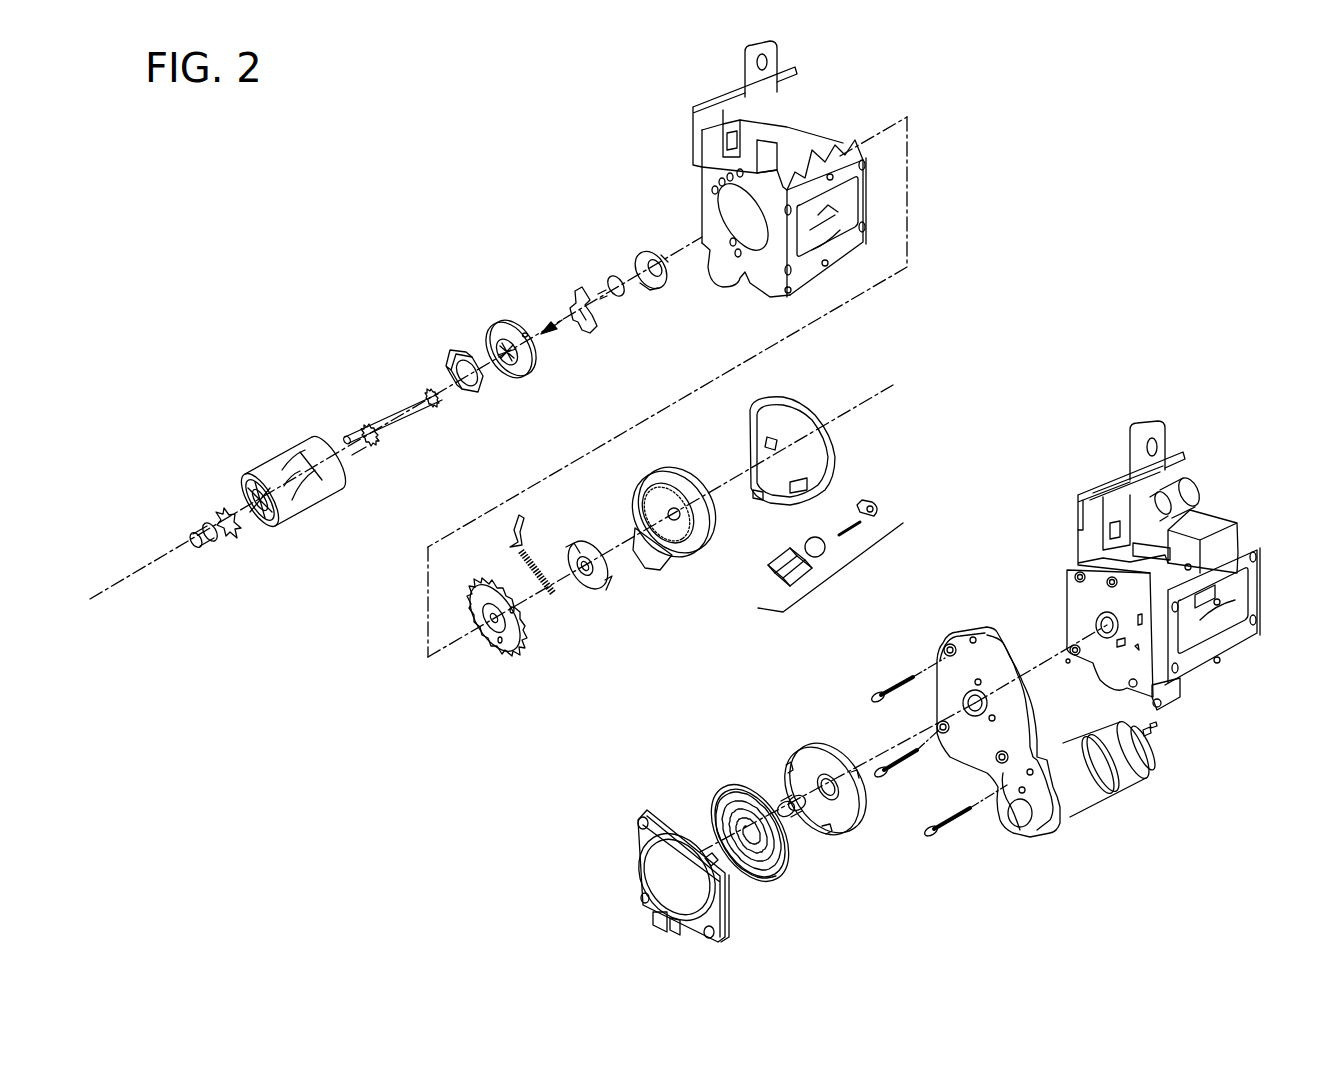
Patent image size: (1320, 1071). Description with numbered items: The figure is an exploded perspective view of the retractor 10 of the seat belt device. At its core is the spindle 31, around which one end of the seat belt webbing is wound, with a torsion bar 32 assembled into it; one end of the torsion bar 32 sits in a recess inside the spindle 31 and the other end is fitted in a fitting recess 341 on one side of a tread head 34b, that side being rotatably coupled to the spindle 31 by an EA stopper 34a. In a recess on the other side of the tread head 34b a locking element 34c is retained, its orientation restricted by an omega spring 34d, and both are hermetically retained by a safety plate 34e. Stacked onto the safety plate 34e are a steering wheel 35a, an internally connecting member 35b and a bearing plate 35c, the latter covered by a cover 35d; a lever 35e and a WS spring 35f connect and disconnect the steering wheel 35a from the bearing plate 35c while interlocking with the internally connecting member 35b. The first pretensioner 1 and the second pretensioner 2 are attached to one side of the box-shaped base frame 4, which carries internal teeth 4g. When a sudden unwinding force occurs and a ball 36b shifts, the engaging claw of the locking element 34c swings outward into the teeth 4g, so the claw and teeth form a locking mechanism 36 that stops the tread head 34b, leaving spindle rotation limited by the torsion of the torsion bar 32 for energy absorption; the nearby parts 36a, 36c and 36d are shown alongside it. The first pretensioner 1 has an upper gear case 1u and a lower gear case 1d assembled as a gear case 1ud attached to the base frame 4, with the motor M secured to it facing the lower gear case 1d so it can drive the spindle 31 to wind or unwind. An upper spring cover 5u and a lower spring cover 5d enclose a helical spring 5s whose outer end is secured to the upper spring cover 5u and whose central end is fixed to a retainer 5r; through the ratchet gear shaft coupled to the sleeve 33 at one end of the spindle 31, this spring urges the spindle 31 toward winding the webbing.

The first pretensioner 1 is at (1016, 741).
The lower gear case 1d is at (966, 689).
The upper gear case 1u is at (943, 655).
The gear case 1ud is at (963, 616).
The second pretensioner 2 is at (1190, 720).
The base frame 4 is at (999, 403).
The internal teeth 4g is at (812, 150).
The lower spring cover 5d is at (812, 744).
The retainer 5r is at (791, 821).
The helical spring 5s is at (750, 881).
The upper spring cover 5u is at (645, 815).
The retractor 10 is at (1017, 296).
The spindle 31 is at (277, 453).
The torsion bar 32 is at (401, 408).
The sleeve 33 is at (193, 530).
The EA stopper 34a is at (475, 393).
The tread head 34b is at (528, 353).
The fitting recess 341 is at (495, 349).
The locking element 34c is at (590, 331).
The omega spring 34d is at (617, 278).
The safety plate 34e is at (648, 252).
The steering wheel 35a is at (505, 645).
The internally connecting member 35b is at (601, 594).
The bearing plate 35c is at (677, 473).
The cover 35d is at (813, 403).
The lever 35e is at (520, 527).
The WS spring 35f is at (554, 596).
The locking mechanism 36 is at (828, 530).
The switch holder 36a is at (773, 578).
The ball 36b is at (806, 540).
The pin 36c is at (843, 530).
The retainer plate 36d is at (874, 501).
The motor M is at (1098, 827).